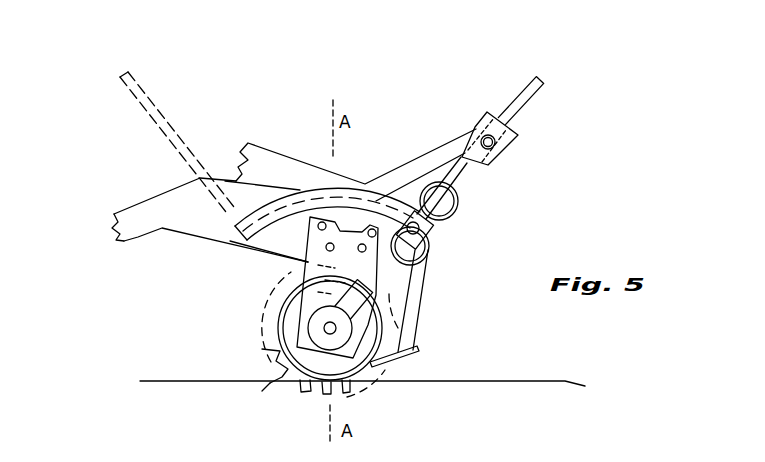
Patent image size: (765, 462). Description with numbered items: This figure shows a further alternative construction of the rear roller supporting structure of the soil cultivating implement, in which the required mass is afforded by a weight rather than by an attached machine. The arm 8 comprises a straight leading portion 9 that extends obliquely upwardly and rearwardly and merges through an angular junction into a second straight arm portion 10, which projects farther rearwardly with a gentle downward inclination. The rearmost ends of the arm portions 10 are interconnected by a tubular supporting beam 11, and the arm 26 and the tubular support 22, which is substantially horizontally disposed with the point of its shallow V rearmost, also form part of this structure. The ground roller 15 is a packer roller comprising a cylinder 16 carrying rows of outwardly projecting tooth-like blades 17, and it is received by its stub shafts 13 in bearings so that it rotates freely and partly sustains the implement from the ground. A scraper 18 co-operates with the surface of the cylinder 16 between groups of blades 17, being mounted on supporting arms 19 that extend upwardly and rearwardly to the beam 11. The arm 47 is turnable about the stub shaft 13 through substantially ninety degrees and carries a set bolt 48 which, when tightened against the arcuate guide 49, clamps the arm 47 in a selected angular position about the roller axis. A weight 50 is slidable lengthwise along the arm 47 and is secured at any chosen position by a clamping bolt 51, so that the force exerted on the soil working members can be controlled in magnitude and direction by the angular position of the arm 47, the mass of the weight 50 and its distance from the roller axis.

The arm 47 is at (133, 80).
The arm 26 is at (263, 150).
The arcuate guide 49 is at (308, 188).
The weight 50 is at (518, 138).
The clamping bolt 51 is at (503, 156).
The tubular support 22 is at (462, 172).
The set bolt 48 is at (437, 248).
The tubular supporting beam 11 is at (426, 263).
The supporting arm 19 is at (421, 305).
The scraper 18 is at (420, 362).
The straight leading portion 9 is at (139, 233).
The arm 8 is at (207, 239).
The second straight arm portion 10 is at (236, 244).
The stub shaft 13 is at (328, 328).
The ground roller 15 is at (262, 349).
The cylinder 16 is at (277, 375).
The tooth-like blades 17 is at (303, 387).